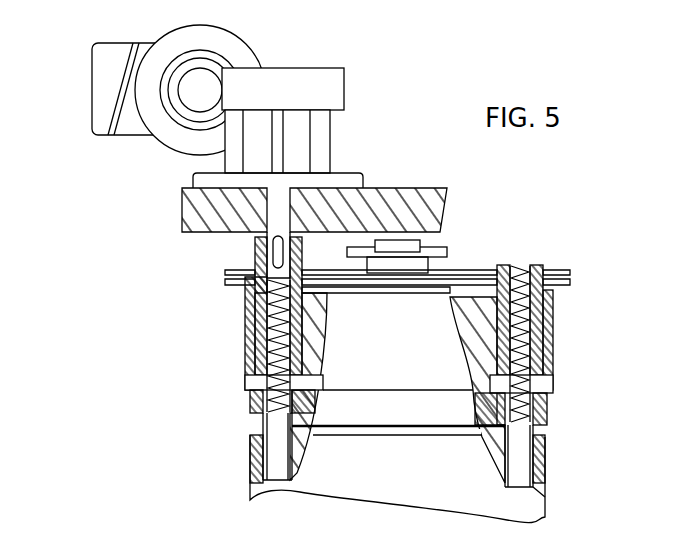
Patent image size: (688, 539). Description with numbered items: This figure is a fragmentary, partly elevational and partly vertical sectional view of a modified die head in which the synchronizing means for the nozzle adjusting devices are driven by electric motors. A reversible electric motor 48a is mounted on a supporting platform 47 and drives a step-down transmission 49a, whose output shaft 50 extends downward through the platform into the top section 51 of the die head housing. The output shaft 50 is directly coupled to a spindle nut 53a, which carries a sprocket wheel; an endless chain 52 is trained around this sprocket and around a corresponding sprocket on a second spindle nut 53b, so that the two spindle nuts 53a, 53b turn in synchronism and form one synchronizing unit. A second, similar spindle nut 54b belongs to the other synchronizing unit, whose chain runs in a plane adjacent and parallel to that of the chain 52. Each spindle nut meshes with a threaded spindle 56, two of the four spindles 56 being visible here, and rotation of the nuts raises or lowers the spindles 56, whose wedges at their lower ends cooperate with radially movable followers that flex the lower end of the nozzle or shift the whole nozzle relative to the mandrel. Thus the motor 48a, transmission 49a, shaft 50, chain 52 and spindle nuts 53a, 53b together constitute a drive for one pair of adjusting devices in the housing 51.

The supporting platform 47 is at (192, 215).
The reversible electric motor 48a is at (102, 88).
The step-down transmission 49a is at (318, 138).
The output shaft 50 is at (283, 220).
The top section of the housing of the die head 51 is at (412, 352).
The chain 52 is at (468, 272).
The spindle nut 53a is at (250, 342).
The spindle nut 53b is at (553, 340).
The spindle nut 54b is at (383, 265).
The spindle 56 is at (280, 457).